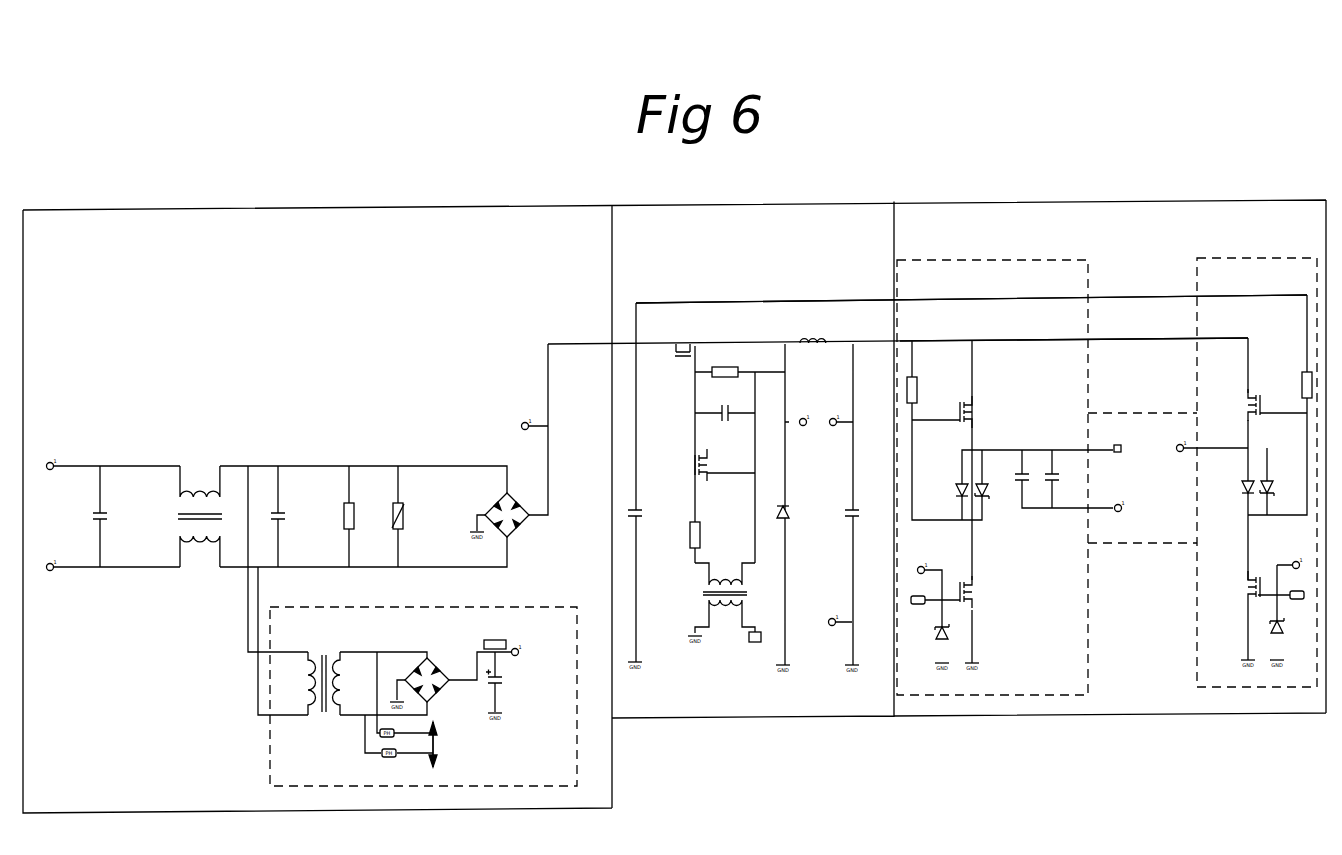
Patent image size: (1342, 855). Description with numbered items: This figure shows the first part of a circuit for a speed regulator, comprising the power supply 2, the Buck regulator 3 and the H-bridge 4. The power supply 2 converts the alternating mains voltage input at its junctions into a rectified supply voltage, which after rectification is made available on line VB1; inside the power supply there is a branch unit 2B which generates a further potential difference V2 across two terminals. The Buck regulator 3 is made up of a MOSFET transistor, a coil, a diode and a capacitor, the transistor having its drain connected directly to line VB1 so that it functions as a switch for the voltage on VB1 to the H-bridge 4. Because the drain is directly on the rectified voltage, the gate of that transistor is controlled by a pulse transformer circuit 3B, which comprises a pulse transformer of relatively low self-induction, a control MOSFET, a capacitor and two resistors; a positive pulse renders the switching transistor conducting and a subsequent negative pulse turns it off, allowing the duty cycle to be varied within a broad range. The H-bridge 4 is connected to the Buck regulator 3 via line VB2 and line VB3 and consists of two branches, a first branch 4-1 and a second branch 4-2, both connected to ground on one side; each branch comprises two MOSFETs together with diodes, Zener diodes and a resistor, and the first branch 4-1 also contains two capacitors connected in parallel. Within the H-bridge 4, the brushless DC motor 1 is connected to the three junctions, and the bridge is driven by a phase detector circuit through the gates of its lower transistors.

The brushless DC motor 1 is at (1158, 411).
The power supply 2 is at (598, 793).
The branch unit 2B is at (423, 696).
The Buck regulator 3 is at (959, 492).
The pulse transformer circuit 3B is at (678, 415).
The H-bridge 4 is at (1163, 694).
The first branch 4-1 is at (1070, 673).
The second branch 4-2 is at (1243, 675).
The further potential difference V2 is at (450, 747).
The rectified voltage line VB1 is at (898, 325).
The line VB2 is at (1020, 341).
The line VB3 is at (1028, 276).